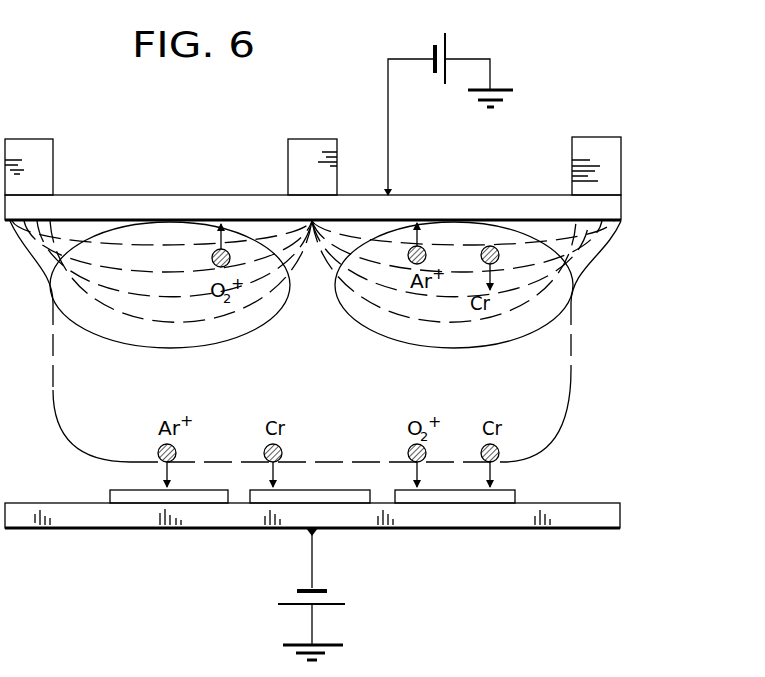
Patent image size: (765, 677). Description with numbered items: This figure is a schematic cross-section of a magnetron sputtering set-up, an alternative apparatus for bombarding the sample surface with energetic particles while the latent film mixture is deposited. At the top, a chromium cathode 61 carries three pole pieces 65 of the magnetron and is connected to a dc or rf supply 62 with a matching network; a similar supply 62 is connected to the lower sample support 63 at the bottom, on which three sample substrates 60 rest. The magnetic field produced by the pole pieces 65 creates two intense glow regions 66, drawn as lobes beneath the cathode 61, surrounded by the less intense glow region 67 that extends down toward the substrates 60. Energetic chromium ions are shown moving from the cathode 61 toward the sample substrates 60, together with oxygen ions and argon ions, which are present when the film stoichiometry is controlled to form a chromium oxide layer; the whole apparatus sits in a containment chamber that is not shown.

The sample substrates 60 is at (122, 490).
The chromium cathode 61 is at (622, 205).
The dc or rf supply 62 is at (448, 50).
The lower sample support 63 is at (622, 510).
The pole pieces 65 is at (43, 165).
The intense glow regions 66 is at (384, 341).
The less intense glow region 67 is at (574, 386).